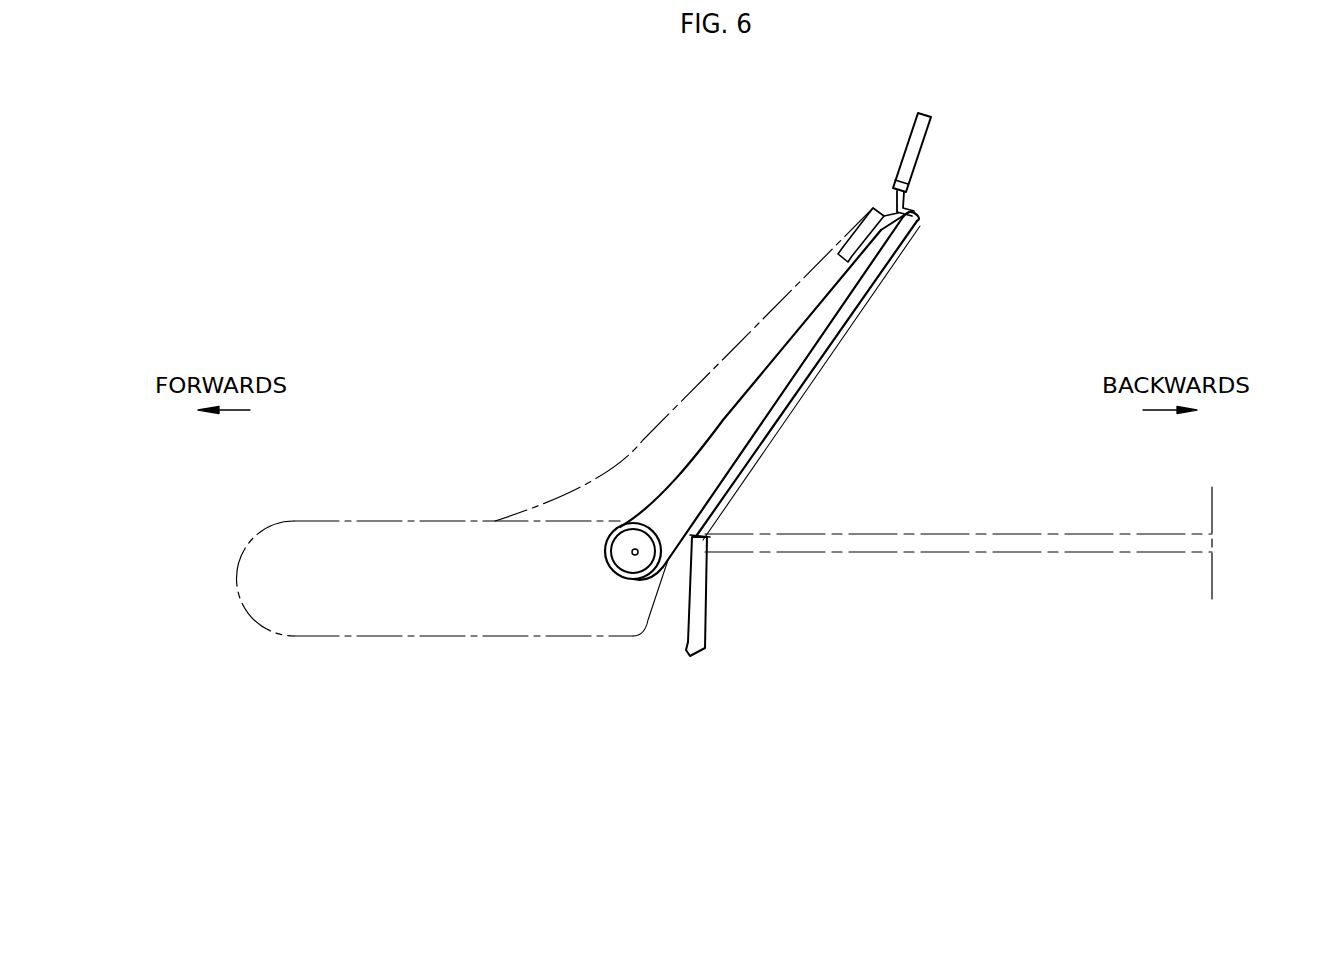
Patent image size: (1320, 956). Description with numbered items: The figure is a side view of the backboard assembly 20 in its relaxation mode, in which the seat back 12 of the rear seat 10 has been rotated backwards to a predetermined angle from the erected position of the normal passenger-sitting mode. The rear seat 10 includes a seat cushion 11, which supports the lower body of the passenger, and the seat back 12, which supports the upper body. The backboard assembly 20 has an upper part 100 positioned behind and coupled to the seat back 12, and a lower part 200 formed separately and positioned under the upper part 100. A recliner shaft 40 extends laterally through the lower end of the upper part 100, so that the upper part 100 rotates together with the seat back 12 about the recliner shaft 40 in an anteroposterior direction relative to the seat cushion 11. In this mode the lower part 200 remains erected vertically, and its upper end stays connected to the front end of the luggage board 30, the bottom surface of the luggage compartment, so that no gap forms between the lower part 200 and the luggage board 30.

The rear seat 10 is at (554, 422).
The seat cushion 11 is at (393, 520).
The seat back 12 is at (710, 372).
The backboard assembly 20 is at (800, 425).
The luggage board 30 is at (991, 534).
The recliner shaft 40 is at (635, 556).
The upper part 100 is at (835, 334).
The lower part 200 is at (707, 628).